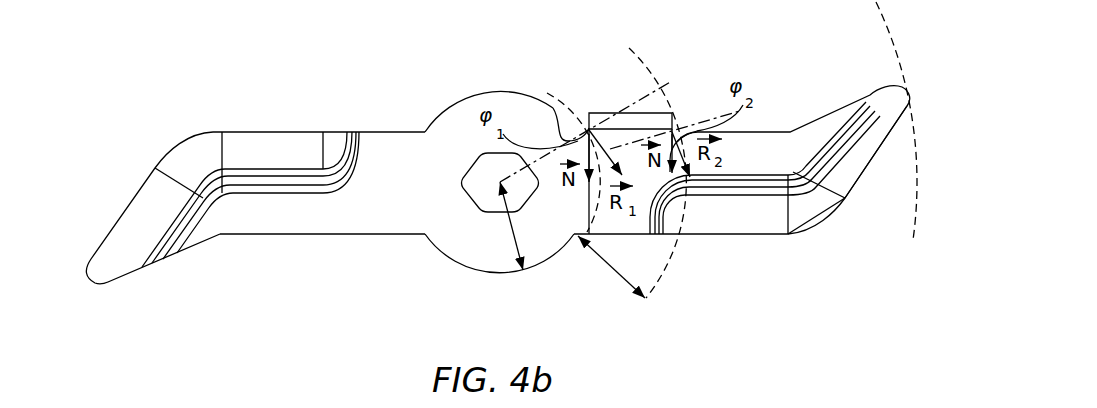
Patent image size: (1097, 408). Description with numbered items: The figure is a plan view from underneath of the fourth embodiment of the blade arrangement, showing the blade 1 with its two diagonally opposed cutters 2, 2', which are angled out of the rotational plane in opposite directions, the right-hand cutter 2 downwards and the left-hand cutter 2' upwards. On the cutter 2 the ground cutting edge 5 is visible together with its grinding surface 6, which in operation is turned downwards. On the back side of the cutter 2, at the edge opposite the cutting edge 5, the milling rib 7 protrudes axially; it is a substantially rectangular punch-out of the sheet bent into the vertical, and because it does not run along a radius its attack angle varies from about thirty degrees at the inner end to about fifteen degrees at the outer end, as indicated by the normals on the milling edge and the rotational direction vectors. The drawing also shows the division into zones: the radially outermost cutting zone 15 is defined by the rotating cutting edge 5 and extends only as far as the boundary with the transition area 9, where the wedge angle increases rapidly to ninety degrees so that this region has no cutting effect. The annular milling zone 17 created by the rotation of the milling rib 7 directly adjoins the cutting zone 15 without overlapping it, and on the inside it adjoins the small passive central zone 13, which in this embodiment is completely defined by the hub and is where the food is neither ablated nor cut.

The blade 1 is at (173, 112).
The cutter 2' is at (222, 221).
The cutter 2 is at (780, 156).
The cutting edge 5 is at (794, 236).
The grinding surface 6 is at (850, 162).
The milling rib 7 is at (590, 113).
The transition area 9 is at (672, 224).
The passive central zone 13 is at (507, 233).
The cutting zone 15 is at (853, 0).
The milling zone 17 is at (605, 265).